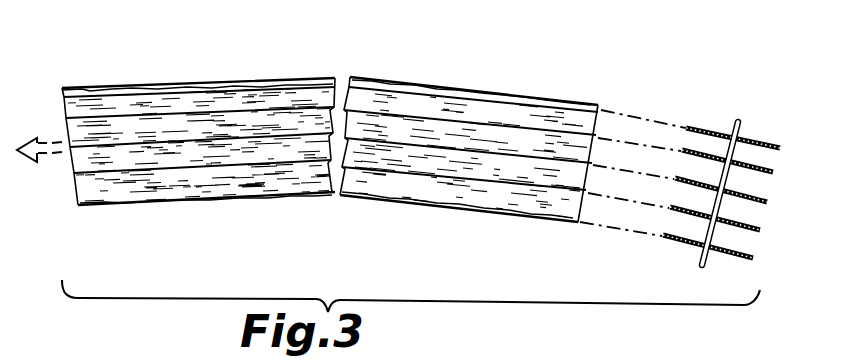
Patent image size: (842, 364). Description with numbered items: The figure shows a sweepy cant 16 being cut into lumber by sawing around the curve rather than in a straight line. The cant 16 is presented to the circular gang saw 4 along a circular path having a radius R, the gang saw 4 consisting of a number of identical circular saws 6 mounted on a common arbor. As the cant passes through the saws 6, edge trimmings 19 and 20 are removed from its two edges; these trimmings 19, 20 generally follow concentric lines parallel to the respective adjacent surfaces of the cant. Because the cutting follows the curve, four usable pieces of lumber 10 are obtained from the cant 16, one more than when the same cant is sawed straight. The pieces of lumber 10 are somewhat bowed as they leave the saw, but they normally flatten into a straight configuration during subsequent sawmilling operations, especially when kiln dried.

The pieces of lumber 10 is at (200, 120).
The sweepy cant 16 is at (457, 69).
The edge trimming 19 is at (538, 93).
The edge trimming 20 is at (477, 209).
The radius R is at (357, 200).
The circular gang saw 4 is at (724, 114).
The circular saws 6 is at (695, 247).